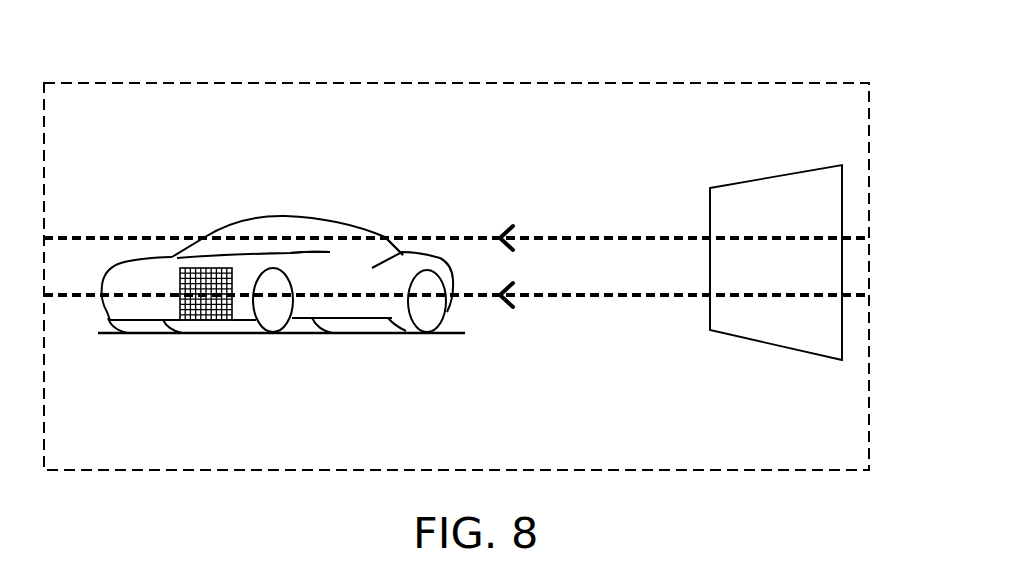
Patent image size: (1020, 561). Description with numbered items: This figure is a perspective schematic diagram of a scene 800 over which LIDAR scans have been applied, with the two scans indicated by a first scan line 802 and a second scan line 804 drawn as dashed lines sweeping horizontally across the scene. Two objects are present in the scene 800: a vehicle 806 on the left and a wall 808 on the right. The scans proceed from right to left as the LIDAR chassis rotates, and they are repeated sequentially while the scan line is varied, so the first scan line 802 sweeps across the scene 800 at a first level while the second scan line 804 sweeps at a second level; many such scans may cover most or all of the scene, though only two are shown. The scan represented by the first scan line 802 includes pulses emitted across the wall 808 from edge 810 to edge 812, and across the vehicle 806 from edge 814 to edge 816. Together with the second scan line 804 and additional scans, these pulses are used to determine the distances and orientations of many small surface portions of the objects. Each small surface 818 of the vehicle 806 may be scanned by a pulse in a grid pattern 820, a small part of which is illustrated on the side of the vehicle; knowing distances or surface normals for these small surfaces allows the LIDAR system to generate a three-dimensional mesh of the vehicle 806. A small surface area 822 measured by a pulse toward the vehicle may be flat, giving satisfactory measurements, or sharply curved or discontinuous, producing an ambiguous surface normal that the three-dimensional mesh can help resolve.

The scene 800 is at (825, 50).
The first scan line 802 is at (600, 238).
The second scan line 804 is at (597, 295).
The vehicle 806 is at (284, 284).
The wall 808 is at (774, 250).
The edge of wall 810 is at (840, 240).
The edge of wall 812 is at (712, 238).
The edge of vehicle 814 is at (385, 237).
The edge of vehicle 816 is at (200, 237).
The small surface 818 is at (210, 322).
The grid pattern 820 is at (190, 320).
The small surface area 822 is at (293, 242).